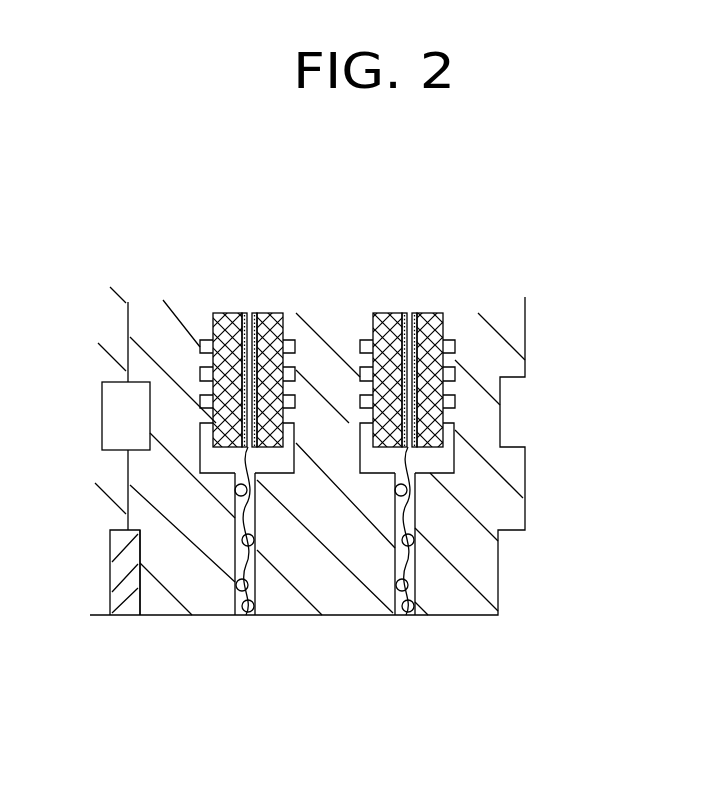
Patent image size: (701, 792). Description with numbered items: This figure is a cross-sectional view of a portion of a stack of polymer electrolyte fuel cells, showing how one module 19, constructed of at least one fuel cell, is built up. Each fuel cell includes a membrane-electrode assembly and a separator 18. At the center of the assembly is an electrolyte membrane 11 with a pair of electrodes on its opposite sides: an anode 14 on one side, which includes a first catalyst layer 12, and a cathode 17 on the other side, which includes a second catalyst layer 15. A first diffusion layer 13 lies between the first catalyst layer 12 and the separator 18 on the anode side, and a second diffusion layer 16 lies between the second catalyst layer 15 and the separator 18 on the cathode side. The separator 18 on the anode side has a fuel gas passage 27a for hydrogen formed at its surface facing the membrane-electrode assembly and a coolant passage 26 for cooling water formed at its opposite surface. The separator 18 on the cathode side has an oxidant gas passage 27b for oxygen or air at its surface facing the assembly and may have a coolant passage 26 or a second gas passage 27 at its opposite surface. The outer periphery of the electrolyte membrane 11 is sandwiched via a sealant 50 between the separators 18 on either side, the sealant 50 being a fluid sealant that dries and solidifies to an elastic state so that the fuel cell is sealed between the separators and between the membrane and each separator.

The electrolyte membrane 11 is at (248, 316).
The first catalyst layer 12 is at (240, 316).
The first diffusion layer 13 is at (228, 316).
The anode 14 is at (285, 288).
The second catalyst layer 15 is at (262, 316).
The second diffusion layer 16 is at (273, 316).
The cathode 17 is at (373, 288).
The separator 18 is at (108, 330).
The module 19 is at (305, 396).
The coolant passage 26 is at (120, 410).
The second gas passage 27 is at (455, 347).
The fuel gas passage 27a is at (202, 345).
The oxidant gas passage 27b is at (295, 345).
The sealant 50 is at (235, 578).